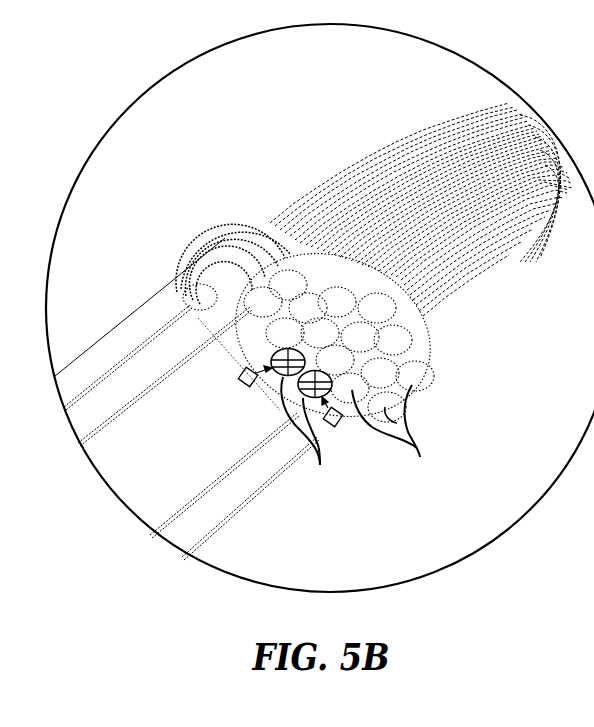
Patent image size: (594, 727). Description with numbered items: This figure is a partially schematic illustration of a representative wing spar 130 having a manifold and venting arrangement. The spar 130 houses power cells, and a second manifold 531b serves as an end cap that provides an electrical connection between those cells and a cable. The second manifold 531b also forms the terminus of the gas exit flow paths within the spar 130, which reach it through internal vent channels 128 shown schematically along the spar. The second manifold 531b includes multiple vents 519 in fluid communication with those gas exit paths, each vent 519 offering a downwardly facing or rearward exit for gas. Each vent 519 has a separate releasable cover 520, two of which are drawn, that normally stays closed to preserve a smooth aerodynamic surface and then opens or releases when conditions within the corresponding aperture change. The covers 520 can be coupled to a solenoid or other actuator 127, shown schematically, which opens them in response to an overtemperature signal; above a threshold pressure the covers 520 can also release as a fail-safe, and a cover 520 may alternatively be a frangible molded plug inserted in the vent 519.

The spar 130 is at (138, 312).
The internal vent channels 128 is at (200, 258).
The second manifold 531b is at (243, 228).
The releasable cover 520 is at (304, 421).
The actuator 127 is at (243, 380).
The vent 519 is at (420, 457).